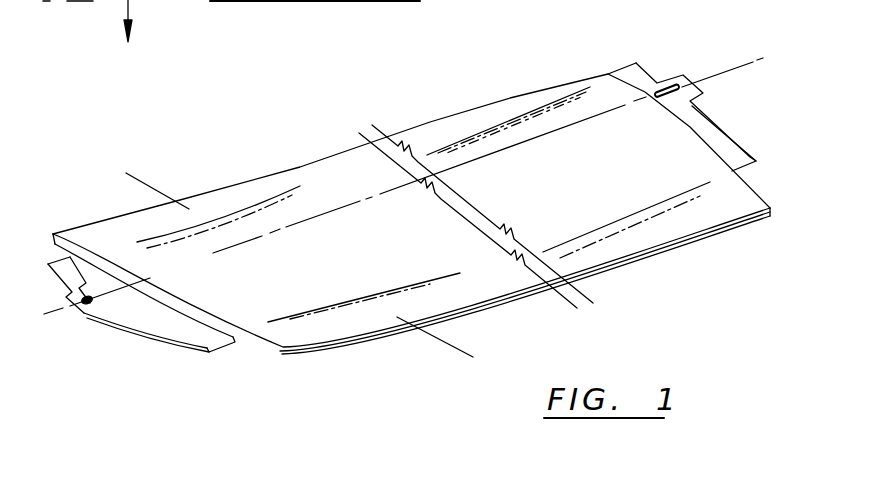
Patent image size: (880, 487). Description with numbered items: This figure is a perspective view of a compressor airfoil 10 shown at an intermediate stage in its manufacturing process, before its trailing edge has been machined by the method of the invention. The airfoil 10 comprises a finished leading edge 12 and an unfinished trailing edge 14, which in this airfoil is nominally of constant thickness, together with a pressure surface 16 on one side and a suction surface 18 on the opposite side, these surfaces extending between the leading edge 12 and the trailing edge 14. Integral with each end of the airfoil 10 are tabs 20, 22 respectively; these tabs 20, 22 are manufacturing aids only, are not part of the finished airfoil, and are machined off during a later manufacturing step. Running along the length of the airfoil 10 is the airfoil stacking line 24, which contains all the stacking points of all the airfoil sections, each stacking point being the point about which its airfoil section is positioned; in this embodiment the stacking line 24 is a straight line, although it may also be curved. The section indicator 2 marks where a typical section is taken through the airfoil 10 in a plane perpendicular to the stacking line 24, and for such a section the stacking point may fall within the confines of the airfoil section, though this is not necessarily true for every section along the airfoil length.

The compressor airfoil 10 is at (248, 142).
The finished leading edge 12 is at (330, 155).
The unfinished trailing edge 14 is at (300, 349).
The pressure surface 16 is at (582, 265).
The suction surface 18 is at (250, 336).
The tab 20 is at (645, 75).
The tab 22 is at (143, 317).
The airfoil stacking line 24 is at (541, 138).
The section line 2- 2 is at (188, 168).